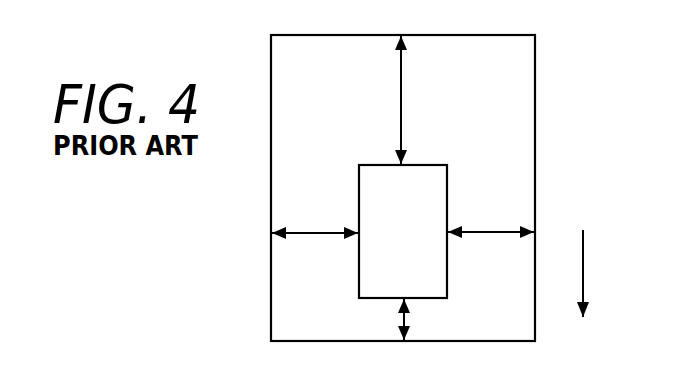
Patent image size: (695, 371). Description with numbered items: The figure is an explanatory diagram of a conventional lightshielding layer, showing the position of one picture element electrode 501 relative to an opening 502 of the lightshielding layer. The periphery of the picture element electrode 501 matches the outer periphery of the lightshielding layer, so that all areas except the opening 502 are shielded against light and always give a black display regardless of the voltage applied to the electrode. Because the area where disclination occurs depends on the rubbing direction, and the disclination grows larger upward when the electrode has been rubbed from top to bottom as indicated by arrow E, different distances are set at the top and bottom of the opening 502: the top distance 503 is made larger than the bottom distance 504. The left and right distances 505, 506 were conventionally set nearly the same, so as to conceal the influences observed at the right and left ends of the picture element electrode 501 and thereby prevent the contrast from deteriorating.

The picture element electrode 501 is at (535, 62).
The opening of the lightshielding layer 502 is at (430, 164).
The distance 503 is at (424, 100).
The distance 504 is at (427, 319).
The distance 505 is at (315, 219).
The distance 506 is at (491, 218).
The arrow indicating rubbing direction E is at (585, 258).